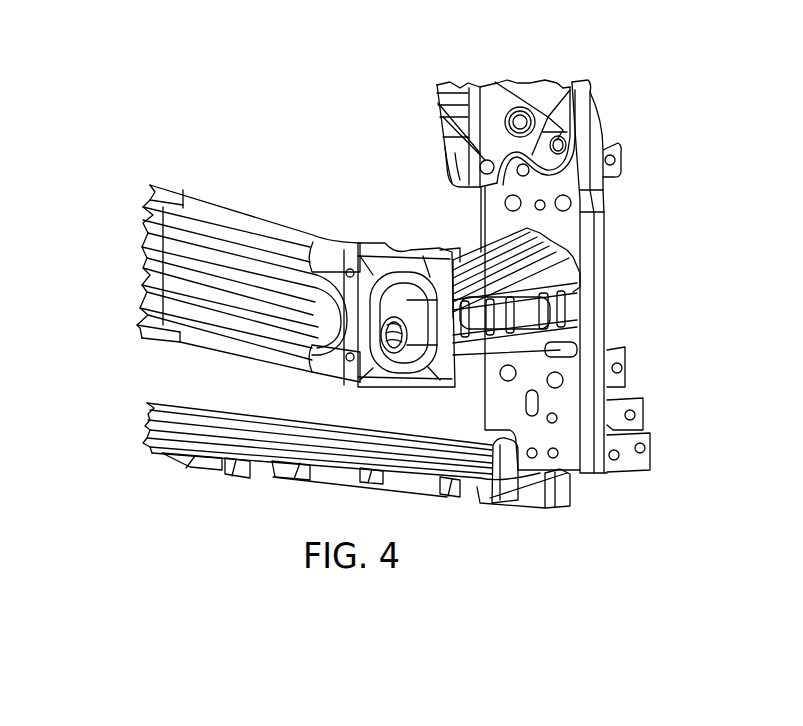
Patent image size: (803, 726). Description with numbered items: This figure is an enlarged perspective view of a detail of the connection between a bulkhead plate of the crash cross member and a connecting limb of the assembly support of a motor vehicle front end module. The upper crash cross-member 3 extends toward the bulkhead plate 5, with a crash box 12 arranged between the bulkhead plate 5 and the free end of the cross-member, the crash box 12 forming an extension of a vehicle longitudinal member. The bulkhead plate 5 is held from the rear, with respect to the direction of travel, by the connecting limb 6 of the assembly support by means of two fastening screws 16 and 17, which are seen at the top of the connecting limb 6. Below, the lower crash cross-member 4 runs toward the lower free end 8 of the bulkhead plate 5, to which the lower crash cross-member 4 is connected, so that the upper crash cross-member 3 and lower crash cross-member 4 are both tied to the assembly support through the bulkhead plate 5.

The upper crash cross-member 3 is at (173, 292).
The lower crash cross-member 4 is at (195, 430).
The bulkhead plate 5 is at (562, 222).
The connecting limb 6 is at (565, 103).
The lower free end 8 is at (611, 481).
The crash box 12 is at (530, 307).
The fastening screw 16 is at (468, 140).
The fastening screw 17 is at (548, 117).